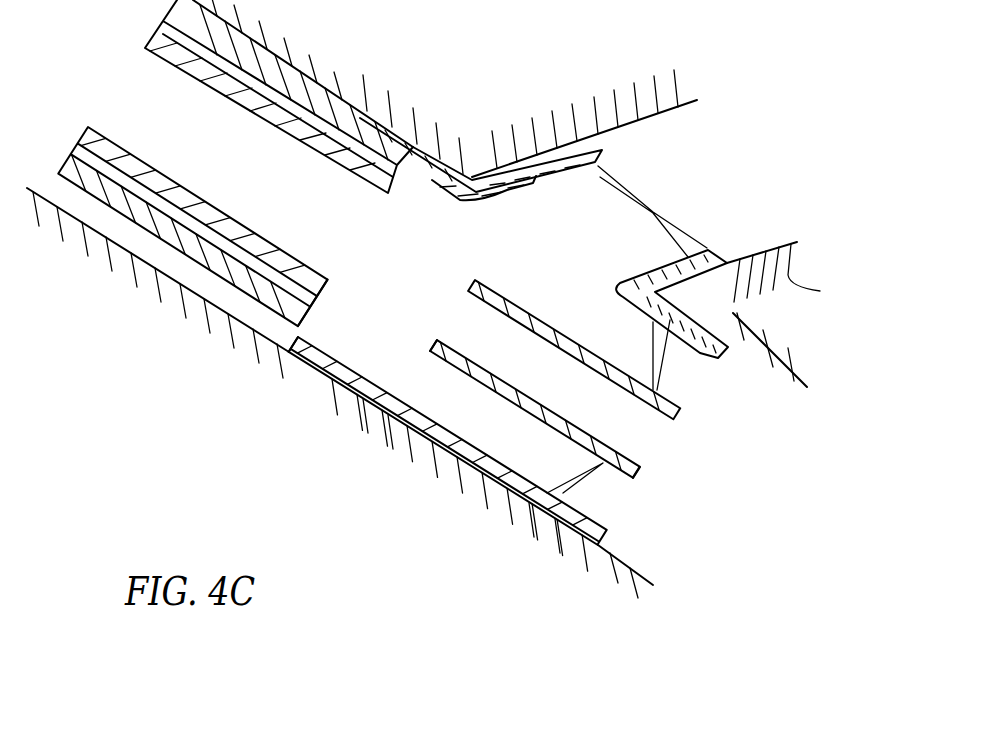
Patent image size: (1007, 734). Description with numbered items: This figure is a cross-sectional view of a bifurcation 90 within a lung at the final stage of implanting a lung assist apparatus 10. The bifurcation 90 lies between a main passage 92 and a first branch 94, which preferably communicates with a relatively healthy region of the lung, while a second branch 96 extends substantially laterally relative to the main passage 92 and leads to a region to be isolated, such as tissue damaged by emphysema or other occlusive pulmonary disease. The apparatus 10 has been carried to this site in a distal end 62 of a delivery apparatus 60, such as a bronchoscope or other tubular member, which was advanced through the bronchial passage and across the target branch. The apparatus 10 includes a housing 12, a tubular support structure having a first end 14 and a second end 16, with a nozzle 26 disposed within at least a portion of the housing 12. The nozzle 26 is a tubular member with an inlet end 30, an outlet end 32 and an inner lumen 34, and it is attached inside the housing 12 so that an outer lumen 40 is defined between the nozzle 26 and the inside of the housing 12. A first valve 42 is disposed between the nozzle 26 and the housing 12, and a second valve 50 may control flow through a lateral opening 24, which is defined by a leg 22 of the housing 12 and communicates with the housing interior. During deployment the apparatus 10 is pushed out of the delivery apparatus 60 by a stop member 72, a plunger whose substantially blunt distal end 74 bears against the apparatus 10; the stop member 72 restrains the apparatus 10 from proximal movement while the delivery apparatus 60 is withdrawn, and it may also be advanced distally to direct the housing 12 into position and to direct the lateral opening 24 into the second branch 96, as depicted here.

The lung assist apparatus 10 is at (483, 475).
The housing 12 is at (427, 442).
The first end 14 is at (550, 527).
The second end 16 is at (302, 358).
The leg 22 is at (576, 152).
The lateral opening 24 is at (508, 193).
The nozzle 26 is at (467, 373).
The inlet end 30 is at (640, 473).
The outlet end 32 is at (433, 348).
The inner lumen 34 is at (574, 349).
The outer lumen 40 is at (561, 466).
The first valve 42 is at (667, 358).
The second valve 50 is at (655, 212).
The delivery apparatus 60 is at (223, 283).
The distal end 62 is at (308, 318).
The stop member 72 is at (297, 116).
The blunt distal end 74 is at (395, 184).
The bifurcation 90 is at (390, 423).
The main passage 92 is at (98, 233).
The first branch 94 is at (612, 563).
The second branch 96 is at (785, 314).